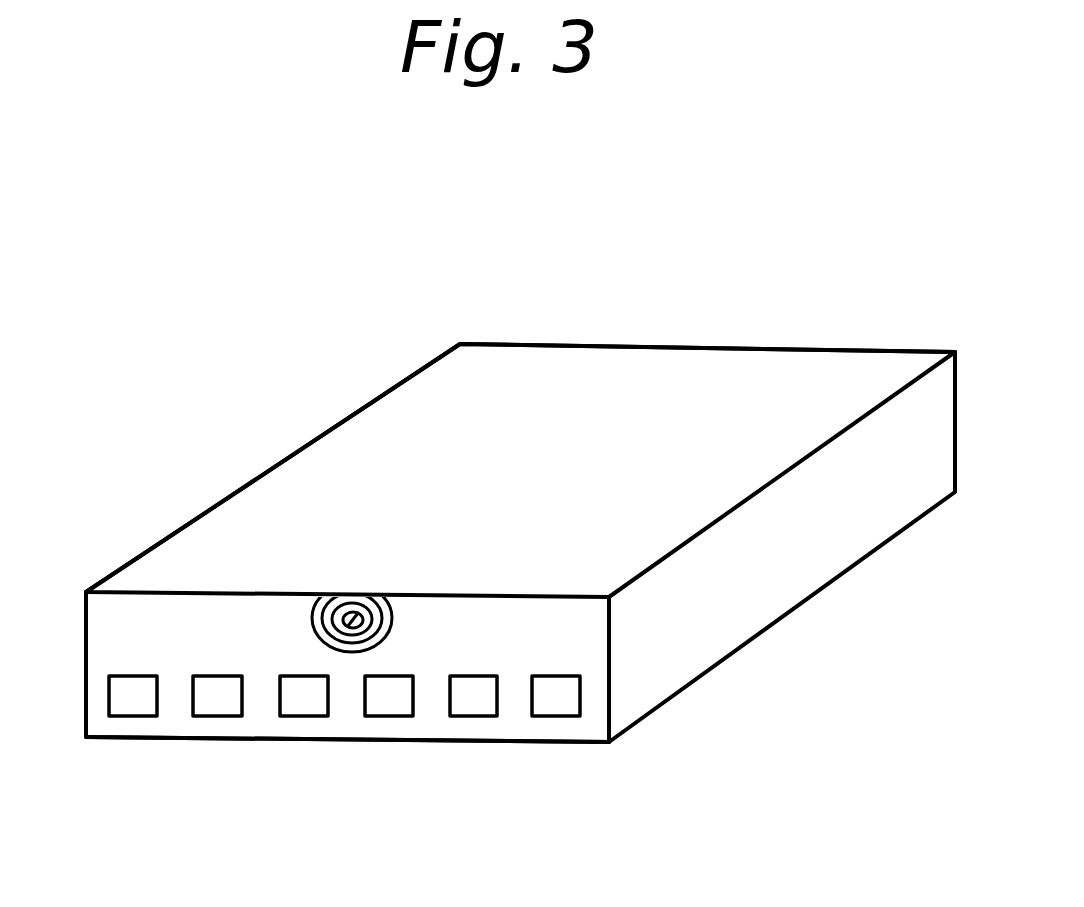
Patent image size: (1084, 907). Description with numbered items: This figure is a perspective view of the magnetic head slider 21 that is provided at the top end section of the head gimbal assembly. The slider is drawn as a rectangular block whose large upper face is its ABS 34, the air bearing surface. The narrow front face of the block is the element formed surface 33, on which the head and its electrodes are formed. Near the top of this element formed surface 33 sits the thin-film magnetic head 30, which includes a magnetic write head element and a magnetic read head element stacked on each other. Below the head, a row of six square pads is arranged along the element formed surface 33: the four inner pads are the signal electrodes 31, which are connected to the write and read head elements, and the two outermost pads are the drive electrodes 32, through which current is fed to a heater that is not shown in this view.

The magnetic head slider 21 is at (575, 293).
The thin-film magnetic head 30 is at (368, 598).
The signal electrodes 31 is at (307, 700).
The drive electrodes 32 is at (131, 700).
The element formed surface 33 is at (383, 730).
The ABS 34 is at (362, 447).